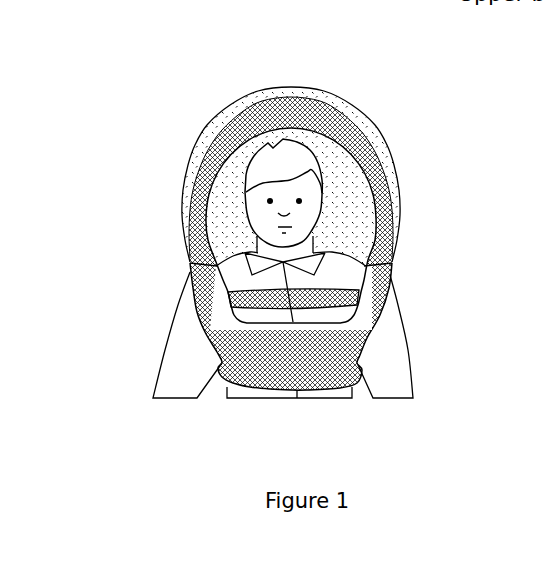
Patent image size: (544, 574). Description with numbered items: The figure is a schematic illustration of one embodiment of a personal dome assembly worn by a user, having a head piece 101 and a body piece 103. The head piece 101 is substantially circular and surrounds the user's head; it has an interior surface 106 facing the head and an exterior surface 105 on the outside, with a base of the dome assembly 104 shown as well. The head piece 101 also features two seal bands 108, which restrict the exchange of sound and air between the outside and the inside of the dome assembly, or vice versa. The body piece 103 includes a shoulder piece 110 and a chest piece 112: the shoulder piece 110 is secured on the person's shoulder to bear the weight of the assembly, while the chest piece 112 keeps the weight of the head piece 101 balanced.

The head piece 101 is at (172, 102).
The body piece 103 is at (427, 265).
The base of the dome assembly 104 is at (350, 124).
The exterior surface 105 is at (398, 195).
The interior surface 106 is at (285, 128).
The seal band 108 is at (393, 262).
The shoulder piece 110 is at (192, 263).
The chest piece 112 is at (317, 300).